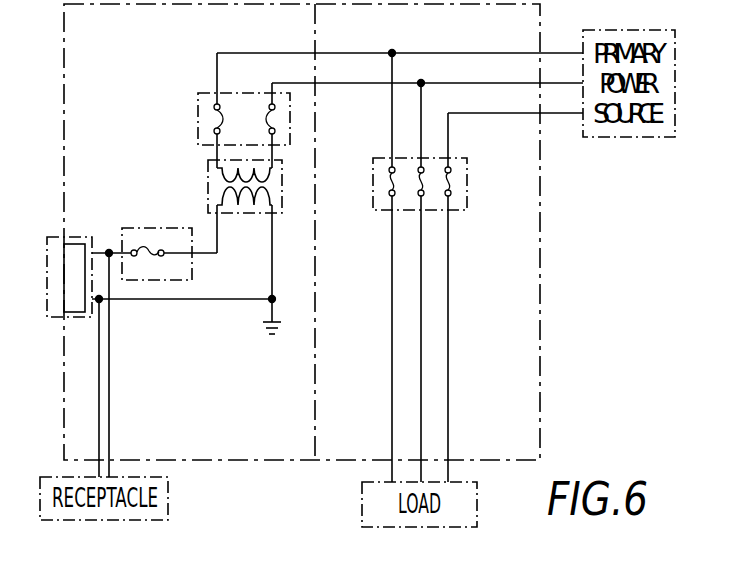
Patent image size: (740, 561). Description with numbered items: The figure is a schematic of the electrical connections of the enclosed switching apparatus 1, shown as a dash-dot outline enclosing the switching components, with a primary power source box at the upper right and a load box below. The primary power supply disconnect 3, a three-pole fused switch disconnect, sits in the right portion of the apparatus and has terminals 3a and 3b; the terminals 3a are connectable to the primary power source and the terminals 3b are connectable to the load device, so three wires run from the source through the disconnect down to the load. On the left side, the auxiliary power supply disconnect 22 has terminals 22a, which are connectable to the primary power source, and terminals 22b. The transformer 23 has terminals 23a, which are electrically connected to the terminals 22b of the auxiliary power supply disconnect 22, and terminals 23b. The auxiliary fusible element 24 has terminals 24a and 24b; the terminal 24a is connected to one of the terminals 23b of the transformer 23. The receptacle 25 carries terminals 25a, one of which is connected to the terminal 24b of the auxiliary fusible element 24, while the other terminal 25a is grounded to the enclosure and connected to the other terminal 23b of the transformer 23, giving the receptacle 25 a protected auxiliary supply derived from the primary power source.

The enclosed switching apparatus 1 is at (584, 234).
The primary power supply disconnect 3 is at (434, 203).
The terminals 3a is at (452, 166).
The terminals 3b is at (452, 194).
The auxiliary power supply disconnect 22 is at (214, 102).
The terminals 22a is at (271, 104).
The terminals 22b is at (271, 131).
The transformer 23 is at (283, 228).
The terminals 23a is at (282, 166).
The terminals 23b is at (268, 204).
The auxiliary fusible element 24 is at (176, 230).
The terminal 24a is at (135, 250).
The terminal 24b is at (164, 256).
The receptacle 25 is at (104, 287).
The terminals 25a is at (108, 252).